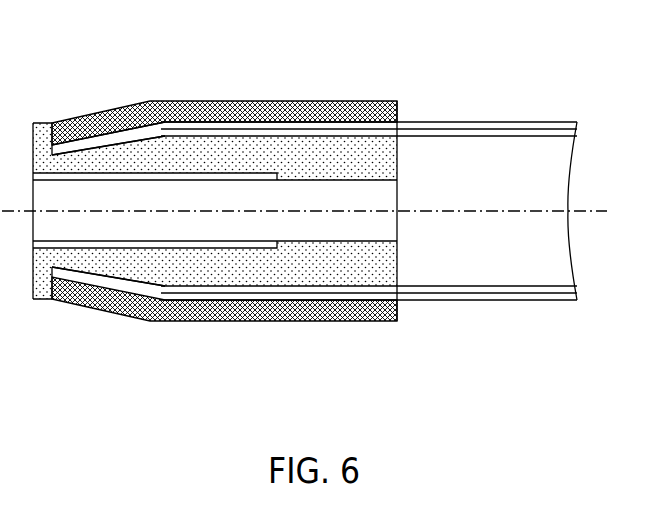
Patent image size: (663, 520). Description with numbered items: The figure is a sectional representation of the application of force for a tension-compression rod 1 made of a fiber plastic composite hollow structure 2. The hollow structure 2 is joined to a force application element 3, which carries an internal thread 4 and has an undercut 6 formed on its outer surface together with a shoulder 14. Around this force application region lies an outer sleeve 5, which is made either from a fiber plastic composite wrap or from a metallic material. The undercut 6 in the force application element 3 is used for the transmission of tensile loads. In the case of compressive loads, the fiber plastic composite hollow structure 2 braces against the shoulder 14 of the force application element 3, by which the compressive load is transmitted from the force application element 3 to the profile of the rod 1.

The tension-compression rod 1 is at (462, 102).
The fiber plastic composite hollow structure 2 is at (530, 128).
The force application element 3 is at (350, 153).
The internal thread 4 is at (240, 167).
The outer sleeve 5 is at (277, 108).
The undercut 6 is at (117, 145).
The shoulder 14 is at (57, 275).